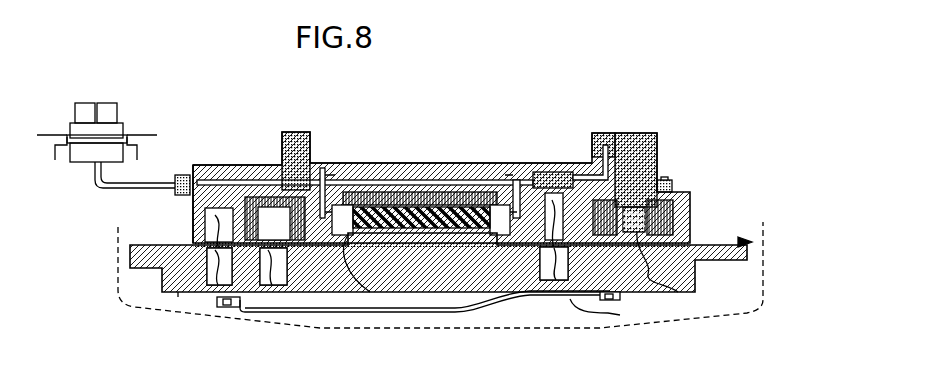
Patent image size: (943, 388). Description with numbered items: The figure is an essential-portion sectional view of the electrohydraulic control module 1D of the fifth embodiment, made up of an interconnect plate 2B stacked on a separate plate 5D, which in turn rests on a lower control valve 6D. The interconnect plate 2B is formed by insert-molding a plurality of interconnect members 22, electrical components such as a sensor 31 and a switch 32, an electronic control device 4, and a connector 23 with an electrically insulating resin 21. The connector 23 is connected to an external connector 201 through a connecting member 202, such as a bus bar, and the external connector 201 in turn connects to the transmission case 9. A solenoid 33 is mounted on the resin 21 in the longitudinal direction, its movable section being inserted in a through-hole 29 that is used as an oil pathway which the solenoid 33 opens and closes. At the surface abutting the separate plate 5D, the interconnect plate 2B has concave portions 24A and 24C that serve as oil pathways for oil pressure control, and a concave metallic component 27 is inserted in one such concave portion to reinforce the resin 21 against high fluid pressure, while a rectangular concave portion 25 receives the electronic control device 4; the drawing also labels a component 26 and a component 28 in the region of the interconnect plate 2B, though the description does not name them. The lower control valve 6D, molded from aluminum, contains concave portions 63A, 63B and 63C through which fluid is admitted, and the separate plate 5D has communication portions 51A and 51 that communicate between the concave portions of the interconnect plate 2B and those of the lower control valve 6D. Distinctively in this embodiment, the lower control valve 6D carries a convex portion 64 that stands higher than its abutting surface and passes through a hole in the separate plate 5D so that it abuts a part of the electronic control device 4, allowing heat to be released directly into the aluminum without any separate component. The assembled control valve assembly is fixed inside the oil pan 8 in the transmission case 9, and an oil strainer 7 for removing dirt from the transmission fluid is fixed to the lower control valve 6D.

The electrohydraulic control module 1D is at (581, 70).
The interconnect plate 2B is at (385, 153).
The electronic control device 4 is at (427, 208).
The separate plate 5D is at (695, 238).
The lower control valve 6D is at (748, 236).
The oil strainer 7 is at (610, 313).
The oil pan 8 is at (763, 267).
The transmission case 9 is at (48, 135).
The resin 21 is at (233, 167).
The interconnect members 22 is at (213, 165).
The connector 23 is at (180, 175).
The concave portion 24A is at (193, 223).
The concave portion 24C is at (583, 162).
The concave portion 25 is at (348, 182).
The coil 26 is at (457, 190).
The concave metallic component 27 is at (267, 173).
The cover 28 is at (500, 162).
The through-hole 29 is at (678, 292).
The sensor 31 is at (302, 132).
The switch 32 is at (548, 163).
The solenoid 33 is at (655, 147).
The communication portion 51 is at (277, 293).
The communication portion 51A is at (213, 292).
The concave portion 63A is at (178, 295).
The concave portion 63B is at (238, 307).
The concave portion 63C is at (513, 306).
The convex portion 64 is at (370, 292).
The external connector 201 is at (122, 122).
The connecting member 202 is at (110, 189).